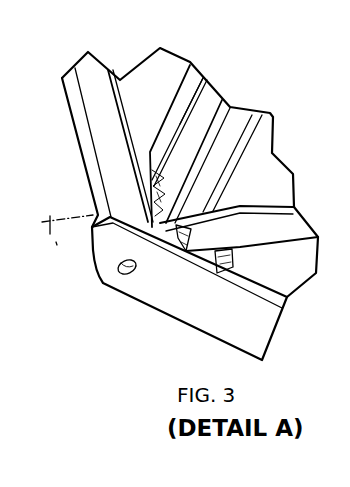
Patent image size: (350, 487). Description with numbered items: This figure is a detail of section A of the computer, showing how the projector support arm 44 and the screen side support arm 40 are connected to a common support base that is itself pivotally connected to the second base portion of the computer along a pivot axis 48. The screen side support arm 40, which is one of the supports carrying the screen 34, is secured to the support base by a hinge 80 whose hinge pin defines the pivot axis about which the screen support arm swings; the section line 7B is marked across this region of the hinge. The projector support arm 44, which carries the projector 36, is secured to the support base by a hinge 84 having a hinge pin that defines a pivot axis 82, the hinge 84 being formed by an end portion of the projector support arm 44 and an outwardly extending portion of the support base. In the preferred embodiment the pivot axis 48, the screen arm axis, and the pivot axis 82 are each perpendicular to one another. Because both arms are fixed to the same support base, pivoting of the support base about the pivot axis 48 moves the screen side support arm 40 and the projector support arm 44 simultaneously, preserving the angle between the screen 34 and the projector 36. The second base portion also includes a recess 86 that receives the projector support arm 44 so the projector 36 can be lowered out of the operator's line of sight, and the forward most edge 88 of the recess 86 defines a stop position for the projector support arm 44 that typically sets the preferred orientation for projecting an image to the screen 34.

The screen 34 is at (160, 63).
The projector 36 is at (207, 98).
The screen side support arm 40 is at (99, 97).
The projector support arm 44 is at (290, 226).
The pivot axis 48 is at (121, 273).
The hinge 80 is at (161, 196).
The pivot axis 82 is at (190, 180).
The hinge 84 is at (200, 238).
The recess 86 is at (225, 258).
The forward most edge 88 is at (238, 259).
The section line 7B is at (67, 245).